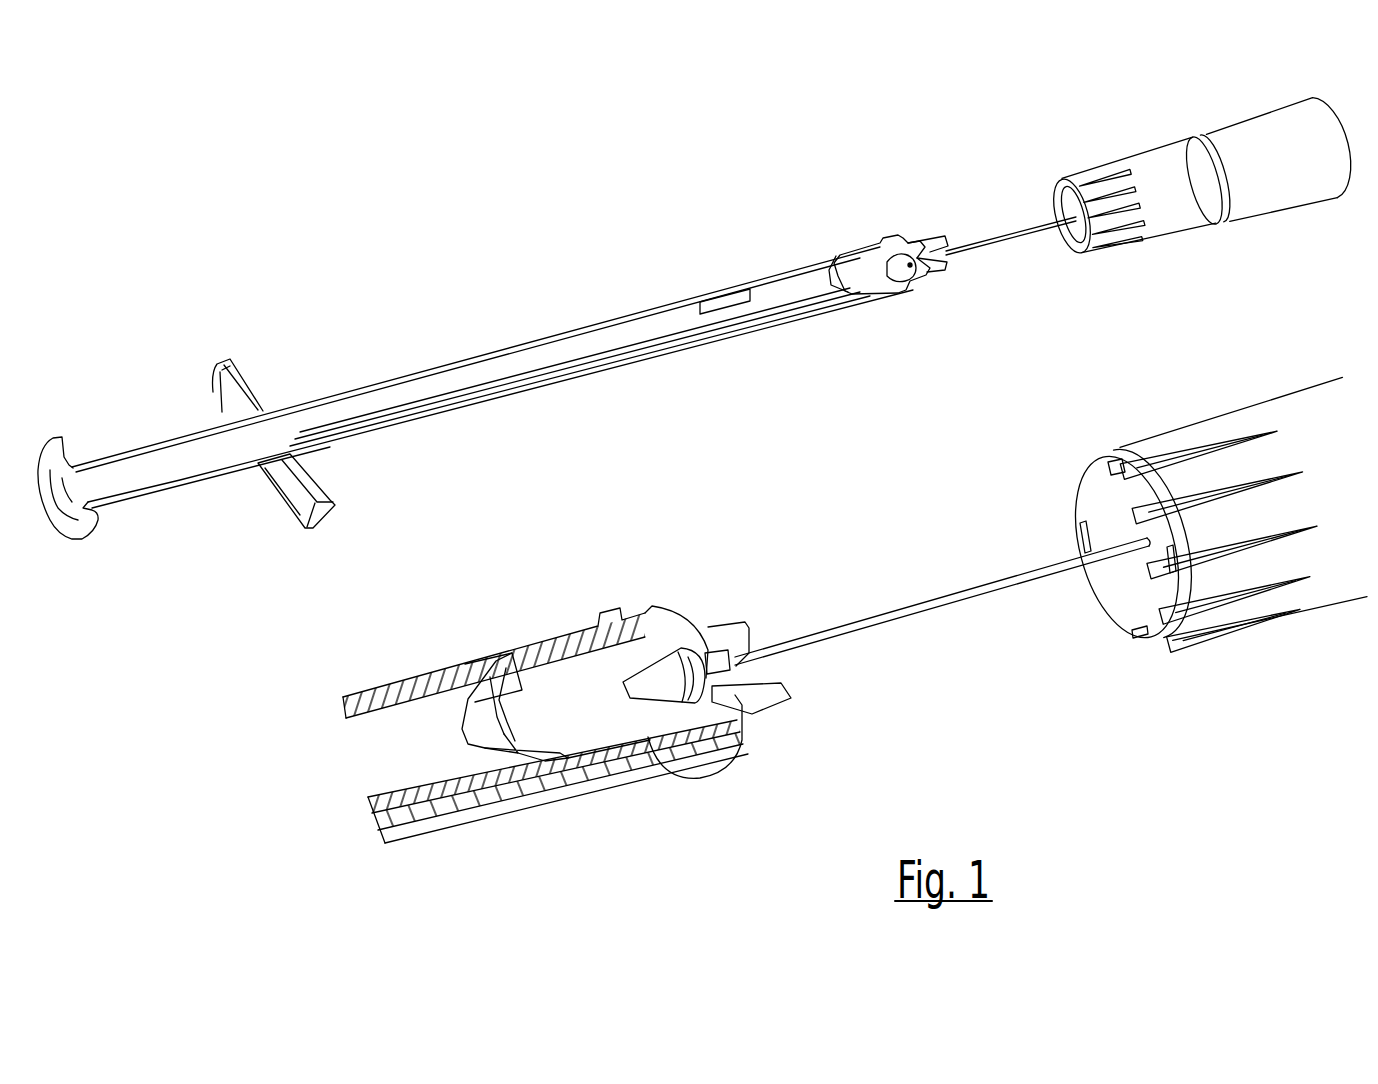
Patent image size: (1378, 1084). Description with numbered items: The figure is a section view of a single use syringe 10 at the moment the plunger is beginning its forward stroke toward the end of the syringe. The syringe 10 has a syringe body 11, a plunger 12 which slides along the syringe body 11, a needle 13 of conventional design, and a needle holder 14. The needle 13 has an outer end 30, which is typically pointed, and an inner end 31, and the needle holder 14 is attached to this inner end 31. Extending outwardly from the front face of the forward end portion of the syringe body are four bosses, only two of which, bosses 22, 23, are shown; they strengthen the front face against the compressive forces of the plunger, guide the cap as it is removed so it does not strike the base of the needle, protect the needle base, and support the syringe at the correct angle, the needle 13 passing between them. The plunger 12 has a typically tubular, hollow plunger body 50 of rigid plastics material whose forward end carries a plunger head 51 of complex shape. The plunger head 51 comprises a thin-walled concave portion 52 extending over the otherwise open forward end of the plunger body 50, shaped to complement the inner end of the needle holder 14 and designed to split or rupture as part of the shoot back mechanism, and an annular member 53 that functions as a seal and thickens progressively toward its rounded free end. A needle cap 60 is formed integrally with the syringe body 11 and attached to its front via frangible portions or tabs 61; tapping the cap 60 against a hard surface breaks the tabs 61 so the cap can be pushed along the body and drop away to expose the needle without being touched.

The single use syringe 10 is at (522, 600).
The syringe body 11 is at (469, 830).
The plunger 12 is at (373, 757).
The needle 13 is at (892, 592).
The needle holder 14 is at (665, 687).
The boss 22 is at (750, 609).
The boss 23 is at (787, 720).
The outer end 30 is at (1110, 570).
The inner end 31 is at (730, 660).
The plunger body 50 is at (366, 696).
The plunger head 51 is at (447, 720).
The concave portion 52 is at (487, 727).
The annular member 53 is at (537, 757).
The cap 60 is at (1246, 393).
The frangible portions or tabs 61 is at (1107, 455).